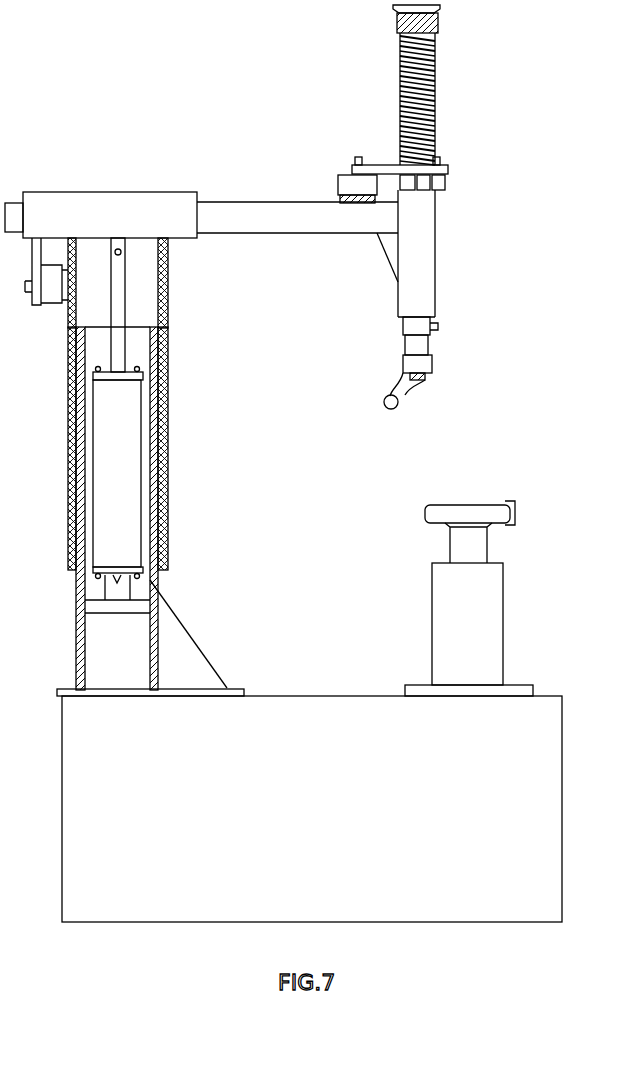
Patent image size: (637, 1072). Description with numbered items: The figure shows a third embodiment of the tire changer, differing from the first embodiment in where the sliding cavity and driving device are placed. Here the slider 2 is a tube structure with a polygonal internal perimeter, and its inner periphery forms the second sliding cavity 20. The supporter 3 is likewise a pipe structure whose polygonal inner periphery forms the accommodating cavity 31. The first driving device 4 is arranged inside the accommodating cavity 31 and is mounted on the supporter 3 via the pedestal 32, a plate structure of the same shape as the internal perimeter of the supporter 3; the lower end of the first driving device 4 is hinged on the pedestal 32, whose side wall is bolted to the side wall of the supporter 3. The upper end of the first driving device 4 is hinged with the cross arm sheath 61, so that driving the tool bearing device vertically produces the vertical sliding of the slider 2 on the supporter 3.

The cross arm sheath 61 is at (107, 215).
The second sliding cavity 20 is at (152, 290).
The slider 2 is at (168, 330).
The supporter 3 is at (167, 475).
The first driving device 4 is at (125, 437).
The accommodating cavity 31 is at (140, 587).
The pedestal 32 is at (137, 608).